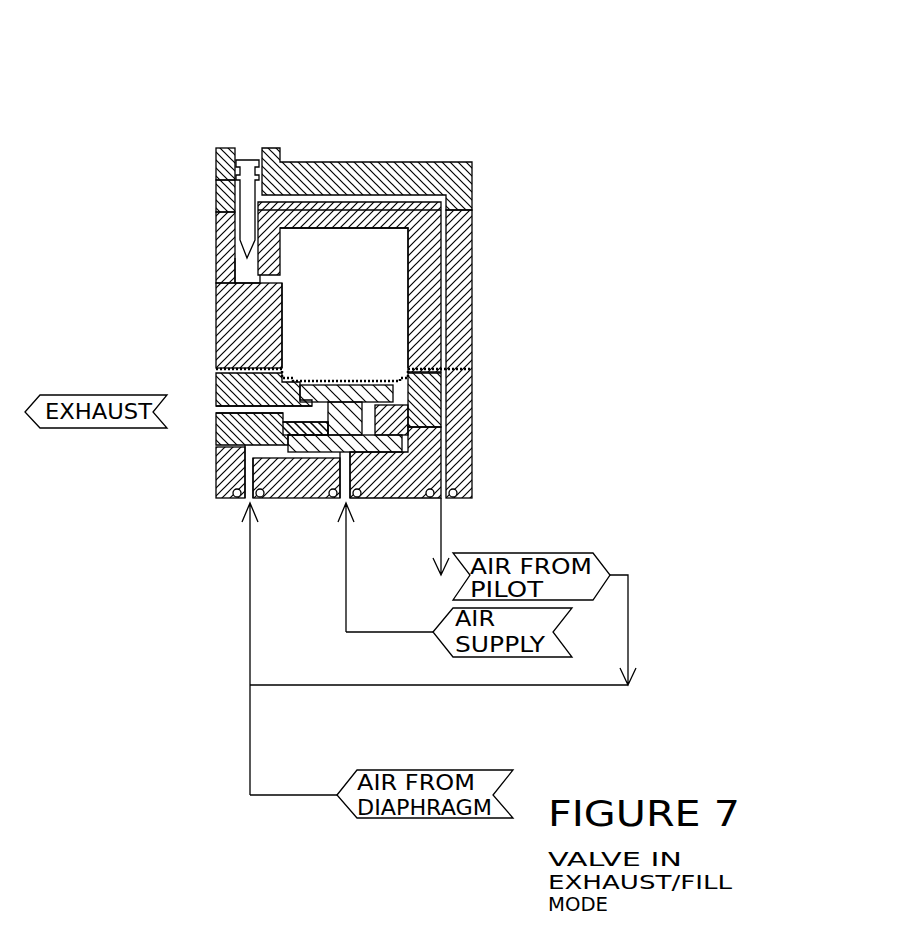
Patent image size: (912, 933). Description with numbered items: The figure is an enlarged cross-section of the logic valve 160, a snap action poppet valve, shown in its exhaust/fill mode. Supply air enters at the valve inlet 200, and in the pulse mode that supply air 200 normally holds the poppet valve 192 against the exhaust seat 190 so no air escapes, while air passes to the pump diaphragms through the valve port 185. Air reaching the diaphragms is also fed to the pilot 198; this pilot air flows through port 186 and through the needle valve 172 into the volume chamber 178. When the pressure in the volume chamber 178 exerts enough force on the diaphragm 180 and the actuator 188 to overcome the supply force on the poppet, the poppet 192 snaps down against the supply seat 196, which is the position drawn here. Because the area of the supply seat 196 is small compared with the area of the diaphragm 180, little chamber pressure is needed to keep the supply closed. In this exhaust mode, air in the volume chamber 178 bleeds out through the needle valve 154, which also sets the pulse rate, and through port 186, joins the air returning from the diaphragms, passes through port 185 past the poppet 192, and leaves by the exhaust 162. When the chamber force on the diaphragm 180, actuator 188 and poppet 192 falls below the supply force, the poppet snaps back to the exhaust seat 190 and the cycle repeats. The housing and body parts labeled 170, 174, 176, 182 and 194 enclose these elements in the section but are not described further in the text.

The needle valve 154 is at (240, 145).
The logic valve 160 is at (435, 130).
The exhaust 162 is at (216, 410).
The housing wall 170 is at (216, 155).
The needle valve 172 is at (216, 182).
The lower housing wall 174 is at (215, 228).
The screw cavity 176 is at (247, 270).
The volume chamber 178 is at (297, 307).
The diaphragm 180 is at (215, 367).
The lower body block 182 is at (215, 390).
The valve port 185 is at (250, 482).
The port 186 is at (440, 240).
The actuator 188 is at (385, 402).
The exhaust seat 190 is at (365, 418).
The poppet valve 192 is at (292, 447).
The outer wall 194 is at (470, 467).
The supply seat 196 is at (370, 453).
The pilot 198 is at (455, 500).
The valve inlet 200 is at (350, 502).